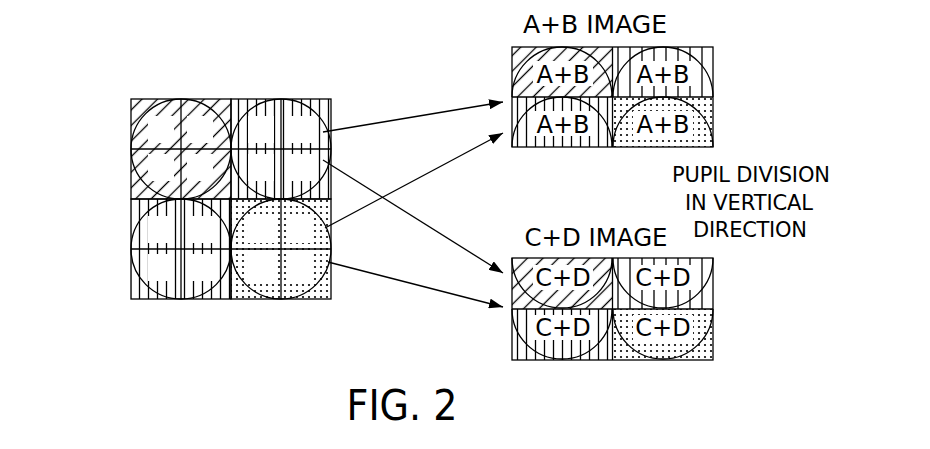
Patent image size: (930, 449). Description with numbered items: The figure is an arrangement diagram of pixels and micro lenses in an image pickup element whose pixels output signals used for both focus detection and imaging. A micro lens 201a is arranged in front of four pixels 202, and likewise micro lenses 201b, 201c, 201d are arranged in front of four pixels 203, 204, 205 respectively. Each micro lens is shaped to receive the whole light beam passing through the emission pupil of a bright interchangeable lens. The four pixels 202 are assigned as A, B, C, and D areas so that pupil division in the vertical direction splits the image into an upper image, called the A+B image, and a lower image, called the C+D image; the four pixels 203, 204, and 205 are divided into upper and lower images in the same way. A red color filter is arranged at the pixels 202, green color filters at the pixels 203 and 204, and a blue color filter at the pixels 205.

The micro lens 201a is at (135, 170).
The micro lens 201b is at (243, 98).
The micro lens 201c is at (135, 223).
The micro lens 201d is at (242, 298).
The four pixels 202 is at (138, 98).
The four pixels 203 is at (322, 98).
The four pixels 204 is at (138, 298).
The four pixels 205 is at (325, 298).